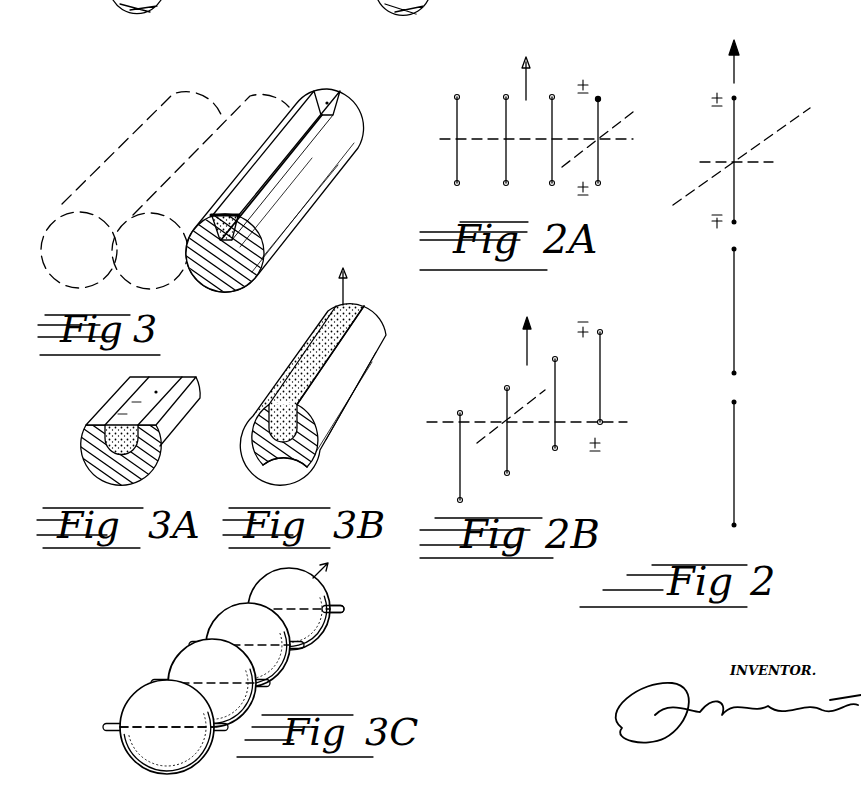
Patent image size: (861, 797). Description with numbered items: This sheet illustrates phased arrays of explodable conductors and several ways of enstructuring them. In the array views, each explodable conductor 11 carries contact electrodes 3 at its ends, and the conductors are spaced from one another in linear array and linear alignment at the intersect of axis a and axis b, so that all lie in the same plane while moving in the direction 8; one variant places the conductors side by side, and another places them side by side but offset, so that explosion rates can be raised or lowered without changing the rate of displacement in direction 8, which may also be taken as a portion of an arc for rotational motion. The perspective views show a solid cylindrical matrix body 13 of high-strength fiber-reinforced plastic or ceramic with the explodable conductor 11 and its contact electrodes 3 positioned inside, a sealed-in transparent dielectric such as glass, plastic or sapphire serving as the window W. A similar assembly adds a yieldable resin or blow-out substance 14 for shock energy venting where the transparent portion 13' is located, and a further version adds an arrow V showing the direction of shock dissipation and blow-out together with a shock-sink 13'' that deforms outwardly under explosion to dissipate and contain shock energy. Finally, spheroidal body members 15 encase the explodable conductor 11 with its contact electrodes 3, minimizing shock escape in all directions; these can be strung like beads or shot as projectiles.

In FIG. 3, the contact electrodes 3 is at (323, 96).
In FIG. 3A, the contact electrodes 3 is at (131, 378).
In FIG. 3B, the contact electrodes 3 is at (320, 340).
In FIG. 3C, the contact electrodes 3 is at (329, 608).
In FIG. 2A, the contact electrodes 3 is at (599, 99).
In FIG. 2B, the contact electrodes 3 is at (601, 332).
In FIG. 2, the contact electrodes 3 is at (735, 98).
In FIG. 3C, the direction of displacement 8 is at (326, 574).
In FIG. 2A, the direction of displacement 8 is at (532, 72).
In FIG. 2B, the direction of displacement 8 is at (533, 335).
In FIG. 2, the direction of displacement 8 is at (740, 59).
In FIG. 3, the explodable conductor 11 is at (303, 125).
In FIG. 3B, the explodable conductor 11 is at (320, 373).
In FIG. 3C, the explodable conductor 11 is at (158, 725).
In FIG. 2A, the explodable conductor 11 is at (600, 164).
In FIG. 2B, the explodable conductor 11 is at (551, 426).
In FIG. 2, the explodable conductor 11 is at (732, 133).
In FIG. 3, the solid cylindrical matrix body 13 is at (202, 205).
In FIG. 3A, the transparent portion 13' is at (147, 446).
In FIG. 3B, the transparent portion 13' is at (321, 408).
In FIG. 3B, the shock-sink 13'' is at (308, 478).
In FIG. 3A, the yieldable resin or blow-out substance 14 is at (127, 410).
In FIG. 3B, the yieldable resin or blow-out substance 14 is at (307, 372).
In FIG. 3C, the spheroidal body members 15 is at (195, 665).
In FIG. 3, the window W is at (274, 170).
In FIG. 3A, the window W is at (143, 420).
In FIG. 3B, the direction of shock dissipation and blow-out V is at (352, 282).
In FIG. 2A, the axis a is at (606, 134).
In FIG. 2B, the axis a is at (512, 408).
In FIG. 2, the axis a is at (749, 150).
In FIG. 2A, the axis b is at (530, 140).
In FIG. 2B, the axis b is at (535, 422).
In FIG. 2, the axis b is at (744, 162).